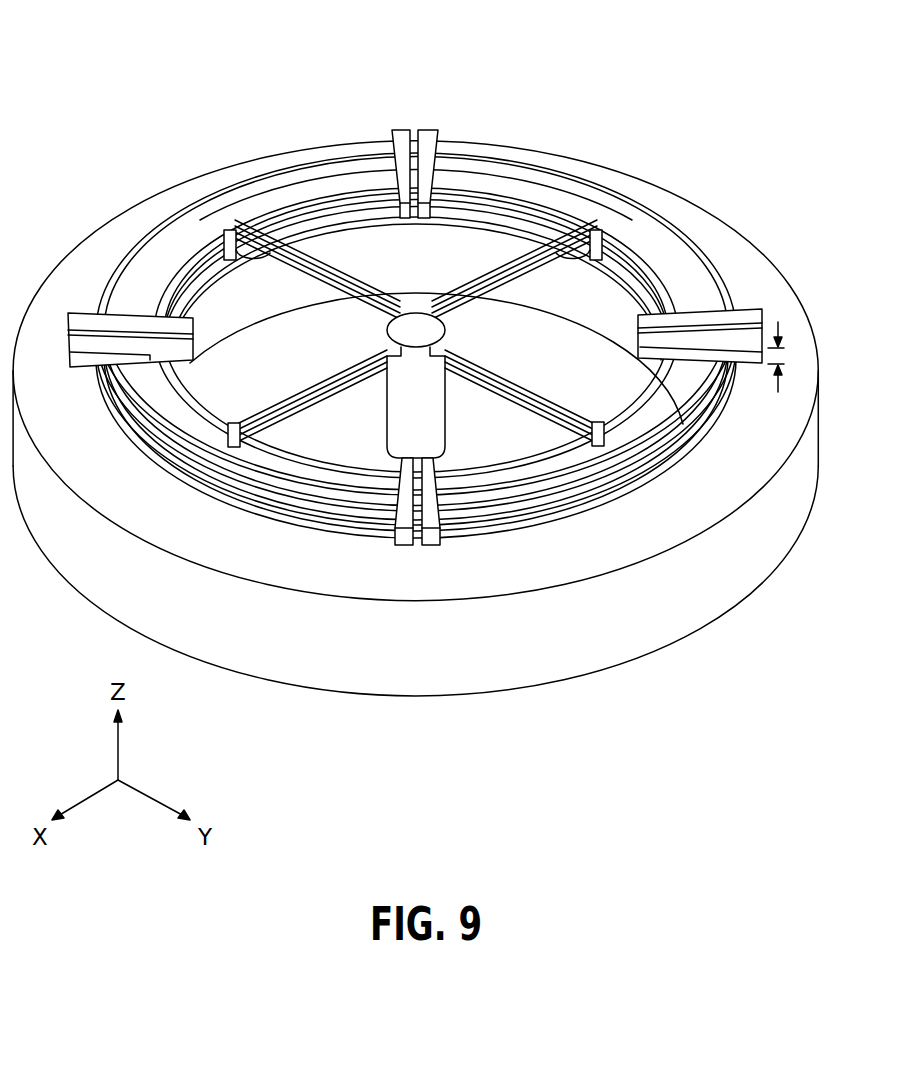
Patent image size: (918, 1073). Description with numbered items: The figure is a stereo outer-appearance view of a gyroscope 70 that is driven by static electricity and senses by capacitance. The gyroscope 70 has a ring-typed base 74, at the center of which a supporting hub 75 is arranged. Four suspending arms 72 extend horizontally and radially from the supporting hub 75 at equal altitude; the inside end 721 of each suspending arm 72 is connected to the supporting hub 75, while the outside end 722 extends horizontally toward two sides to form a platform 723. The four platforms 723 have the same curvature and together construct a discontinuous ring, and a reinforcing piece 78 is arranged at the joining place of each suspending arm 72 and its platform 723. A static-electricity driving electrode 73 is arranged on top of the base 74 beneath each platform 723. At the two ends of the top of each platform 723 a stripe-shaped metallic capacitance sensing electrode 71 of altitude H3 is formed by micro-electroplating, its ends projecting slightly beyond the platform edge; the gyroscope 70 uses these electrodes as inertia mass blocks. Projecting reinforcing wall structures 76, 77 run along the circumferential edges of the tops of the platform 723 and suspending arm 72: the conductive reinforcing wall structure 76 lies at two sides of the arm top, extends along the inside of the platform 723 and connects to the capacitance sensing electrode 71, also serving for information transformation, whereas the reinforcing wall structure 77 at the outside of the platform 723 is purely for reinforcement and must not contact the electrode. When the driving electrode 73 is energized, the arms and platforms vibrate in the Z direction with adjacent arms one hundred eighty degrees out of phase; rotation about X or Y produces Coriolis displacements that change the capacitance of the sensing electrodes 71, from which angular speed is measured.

The gyroscope 70 is at (415, 401).
The capacitance sensing electrode 71 is at (740, 364).
The suspending arm 72 is at (436, 478).
The inside end 721 is at (437, 367).
The outside end 722 is at (613, 440).
The platform 723 is at (527, 485).
The static-electricity driving electrode 73 is at (575, 508).
The ring-typed base 74 is at (320, 662).
The supporting hub 75 is at (370, 326).
The reinforcing wall structure 76 is at (507, 373).
The reinforcing wall structure 77 is at (677, 440).
The reinforcing piece 78 is at (600, 422).
The altitude H3 is at (782, 374).